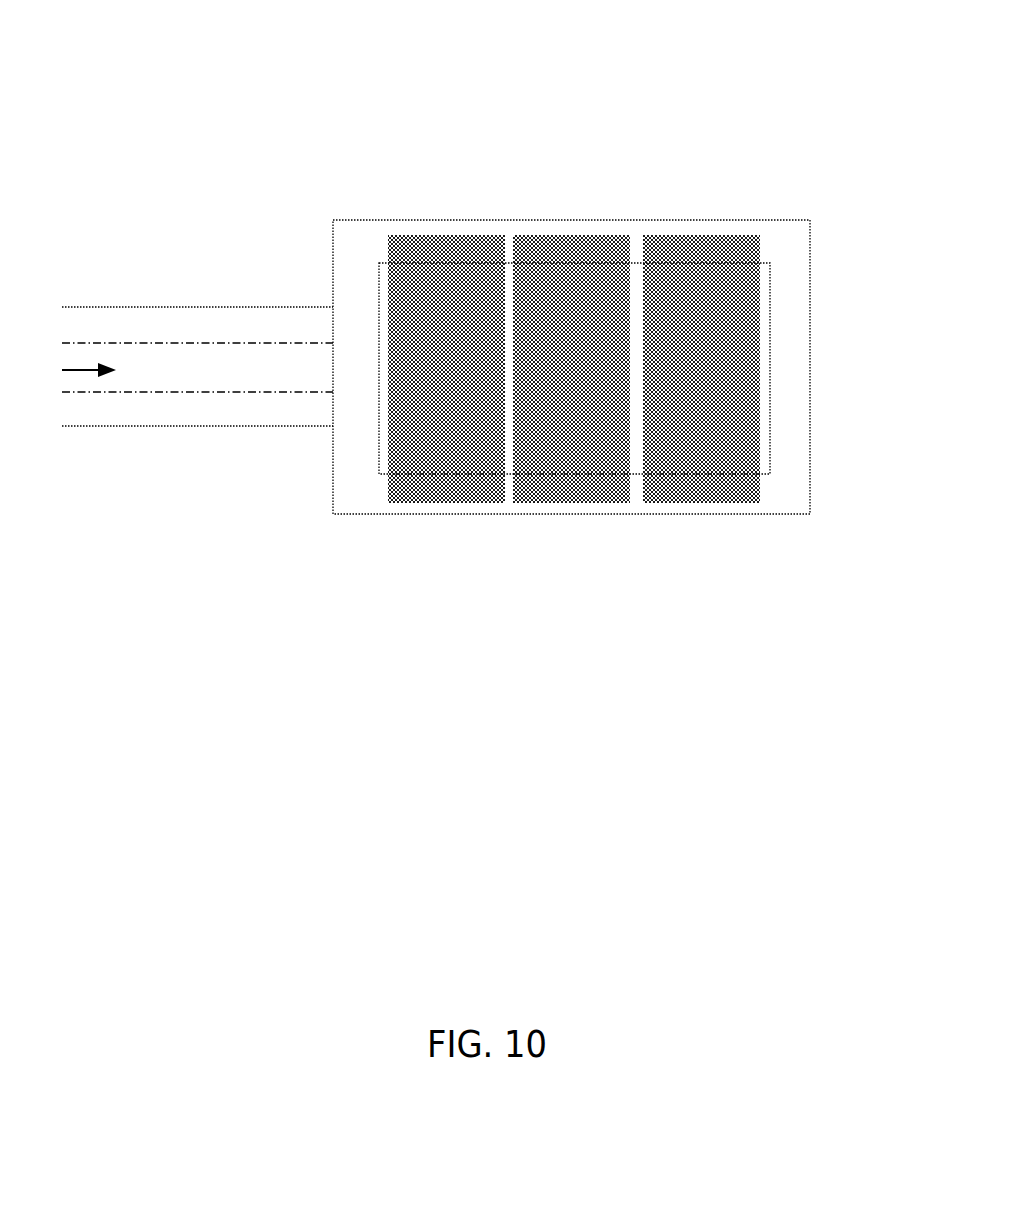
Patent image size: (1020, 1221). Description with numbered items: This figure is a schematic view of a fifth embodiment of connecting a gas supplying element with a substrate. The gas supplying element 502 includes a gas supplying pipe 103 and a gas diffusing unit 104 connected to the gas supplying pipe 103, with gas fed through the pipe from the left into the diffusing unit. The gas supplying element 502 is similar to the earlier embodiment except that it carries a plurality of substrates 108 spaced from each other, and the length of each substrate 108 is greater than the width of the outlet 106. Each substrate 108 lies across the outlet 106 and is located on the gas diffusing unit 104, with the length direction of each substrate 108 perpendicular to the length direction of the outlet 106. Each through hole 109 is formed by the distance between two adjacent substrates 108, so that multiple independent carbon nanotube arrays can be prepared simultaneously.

The gas supplying element 502 is at (264, 88).
The gas supplying pipe 103 is at (225, 320).
The gas diffusing unit 104 is at (795, 405).
The outlet 106 is at (762, 318).
The substrate 108 is at (455, 263).
The through hole 109 is at (636, 285).